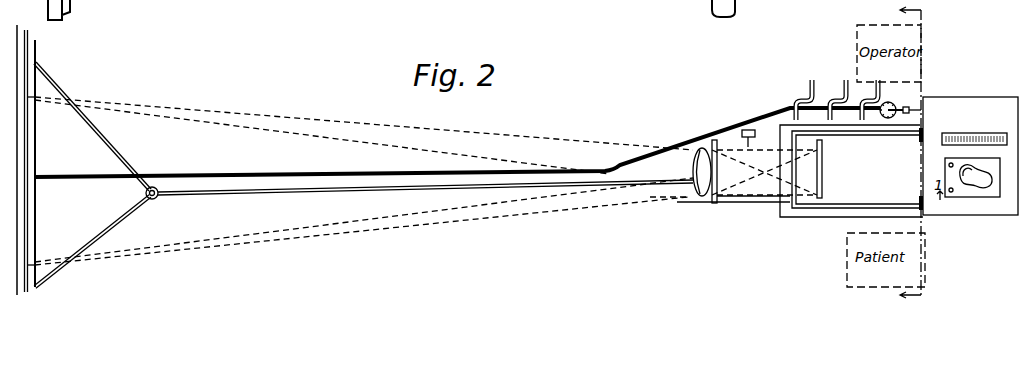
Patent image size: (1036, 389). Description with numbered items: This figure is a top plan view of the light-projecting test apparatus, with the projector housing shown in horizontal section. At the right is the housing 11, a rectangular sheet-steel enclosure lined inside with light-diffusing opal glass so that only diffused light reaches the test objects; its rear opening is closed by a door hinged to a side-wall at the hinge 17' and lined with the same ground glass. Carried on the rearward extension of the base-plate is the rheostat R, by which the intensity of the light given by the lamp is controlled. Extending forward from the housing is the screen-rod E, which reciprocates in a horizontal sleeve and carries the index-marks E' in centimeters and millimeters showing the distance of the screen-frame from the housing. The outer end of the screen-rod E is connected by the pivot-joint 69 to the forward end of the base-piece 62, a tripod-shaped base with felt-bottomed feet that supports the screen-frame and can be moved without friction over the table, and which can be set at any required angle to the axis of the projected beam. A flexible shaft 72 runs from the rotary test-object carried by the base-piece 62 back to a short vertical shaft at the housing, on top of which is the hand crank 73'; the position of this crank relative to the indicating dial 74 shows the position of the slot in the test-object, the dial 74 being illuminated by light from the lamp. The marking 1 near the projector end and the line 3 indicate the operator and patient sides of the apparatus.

The base-piece 62 is at (36, 130).
The flexible shaft 72 is at (196, 172).
The pivot-joint 69 is at (162, 205).
The screen-rod E is at (425, 199).
The index-marks E' is at (685, 172).
The optical unit 1 is at (736, 180).
The housing 11 is at (826, 210).
The indicating dial 74 is at (884, 118).
The hand crank 73' is at (938, 92).
The door hinge 17' is at (898, 143).
The section line 3 is at (925, 149).
The rheostat R is at (970, 156).